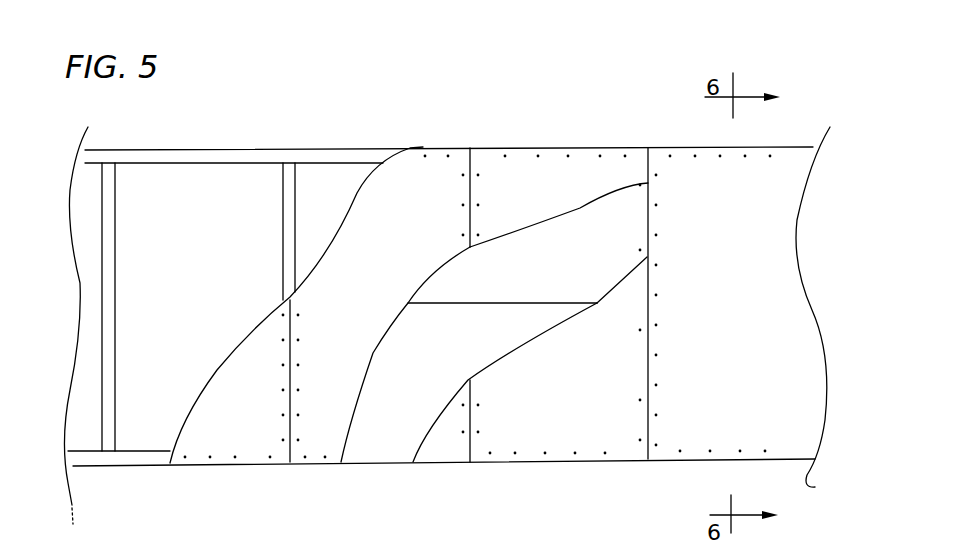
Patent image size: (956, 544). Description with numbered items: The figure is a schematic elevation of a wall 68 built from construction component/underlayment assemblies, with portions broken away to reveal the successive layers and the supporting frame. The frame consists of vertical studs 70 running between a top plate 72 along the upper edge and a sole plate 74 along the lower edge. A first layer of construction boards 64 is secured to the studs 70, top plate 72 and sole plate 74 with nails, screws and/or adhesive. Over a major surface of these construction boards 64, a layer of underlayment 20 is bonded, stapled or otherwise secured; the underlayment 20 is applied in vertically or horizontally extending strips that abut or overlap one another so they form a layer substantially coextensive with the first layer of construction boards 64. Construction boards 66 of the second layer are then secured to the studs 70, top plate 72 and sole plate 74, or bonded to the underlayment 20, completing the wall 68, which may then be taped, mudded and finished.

The underlayment 20 is at (551, 289).
The first layer of construction boards 64 is at (248, 417).
The second layer of construction boards 66 is at (579, 415).
The wall 68 is at (483, 108).
The studs 70 is at (116, 259).
The top plate 72 is at (177, 158).
The sole plate 74 is at (140, 457).